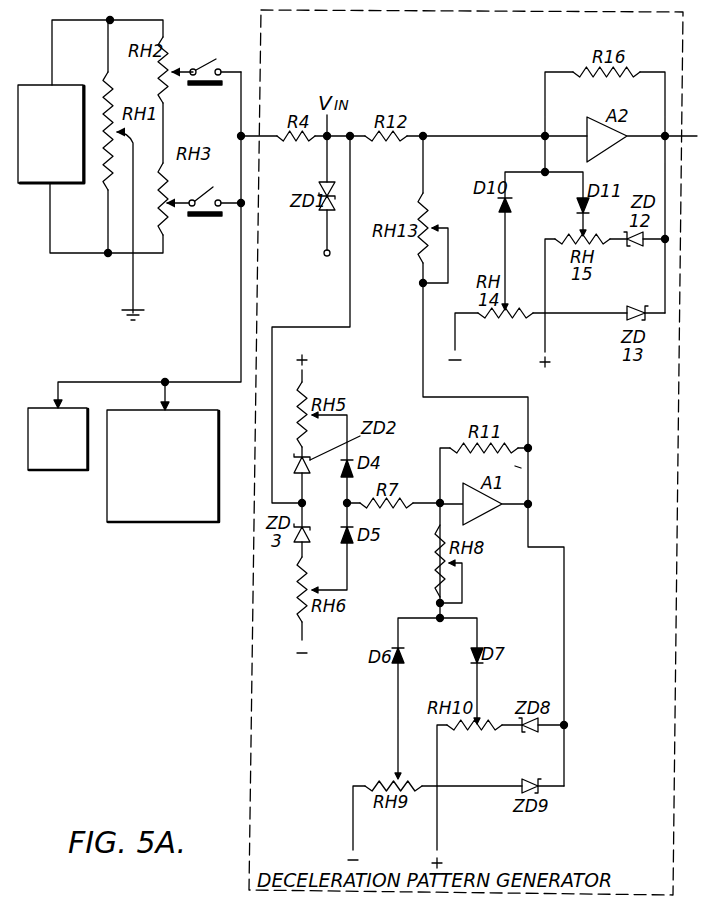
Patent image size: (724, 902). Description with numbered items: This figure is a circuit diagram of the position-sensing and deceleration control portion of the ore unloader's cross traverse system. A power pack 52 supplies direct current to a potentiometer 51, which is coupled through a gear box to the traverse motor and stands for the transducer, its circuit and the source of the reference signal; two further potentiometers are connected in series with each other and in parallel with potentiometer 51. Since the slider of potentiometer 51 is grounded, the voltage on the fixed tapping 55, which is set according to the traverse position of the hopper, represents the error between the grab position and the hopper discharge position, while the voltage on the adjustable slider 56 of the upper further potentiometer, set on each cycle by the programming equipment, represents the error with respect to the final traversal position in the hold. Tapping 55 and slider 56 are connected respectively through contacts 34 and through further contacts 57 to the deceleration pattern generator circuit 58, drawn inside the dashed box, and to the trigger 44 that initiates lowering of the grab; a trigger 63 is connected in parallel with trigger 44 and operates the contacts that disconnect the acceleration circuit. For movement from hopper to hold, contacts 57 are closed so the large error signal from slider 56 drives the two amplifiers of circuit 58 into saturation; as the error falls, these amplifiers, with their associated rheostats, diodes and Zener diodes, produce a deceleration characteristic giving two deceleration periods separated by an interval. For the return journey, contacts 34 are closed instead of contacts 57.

The power pack 52 is at (60, 148).
The potentiometer 51 is at (133, 146).
The adjustable slider 56 is at (178, 68).
The contacts 57 is at (218, 58).
The contacts 34 is at (205, 192).
The fixed tapping 55 is at (168, 206).
The trigger 63 is at (69, 449).
The trigger 44 is at (174, 481).
The deceleration pattern generator circuit 58 is at (240, 599).